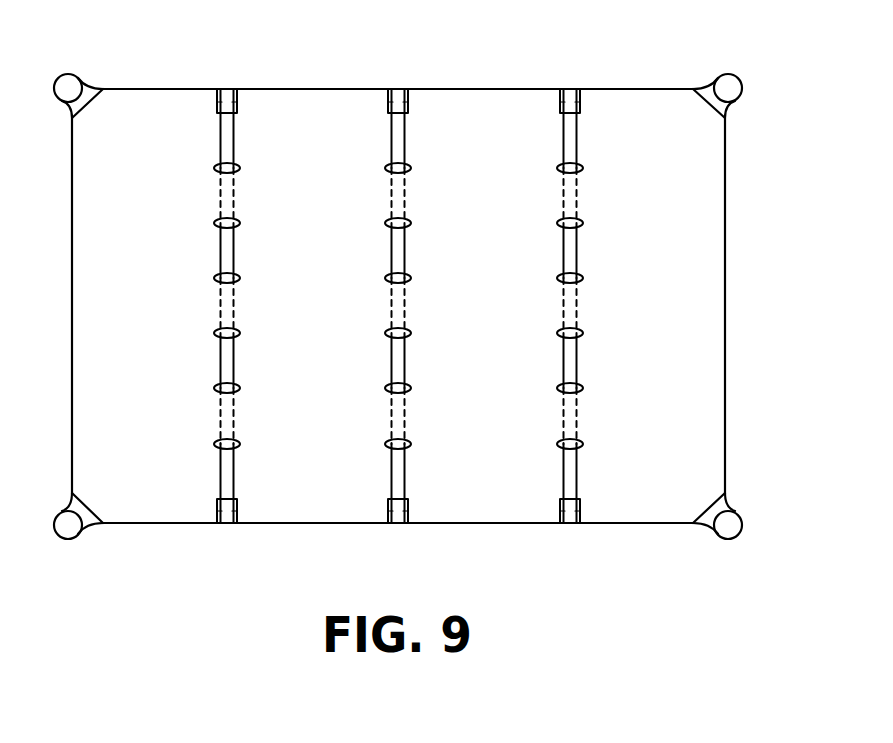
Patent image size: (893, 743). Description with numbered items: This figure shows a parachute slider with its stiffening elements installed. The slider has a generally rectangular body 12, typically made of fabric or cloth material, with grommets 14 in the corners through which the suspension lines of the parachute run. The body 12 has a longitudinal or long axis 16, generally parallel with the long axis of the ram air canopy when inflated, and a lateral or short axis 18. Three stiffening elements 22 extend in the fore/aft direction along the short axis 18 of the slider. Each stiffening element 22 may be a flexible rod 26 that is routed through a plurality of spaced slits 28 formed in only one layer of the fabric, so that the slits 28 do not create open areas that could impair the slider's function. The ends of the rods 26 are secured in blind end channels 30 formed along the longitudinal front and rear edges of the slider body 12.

The slider body 12 is at (436, 310).
The grommets 14 is at (728, 73).
The longitudinal axis 16 is at (450, 525).
The short axis 18 is at (725, 318).
The stiffening element 22 is at (127, 306).
The flexible rods 26 is at (220, 250).
The slits 28 is at (583, 223).
The blind end channels 30 is at (579, 101).